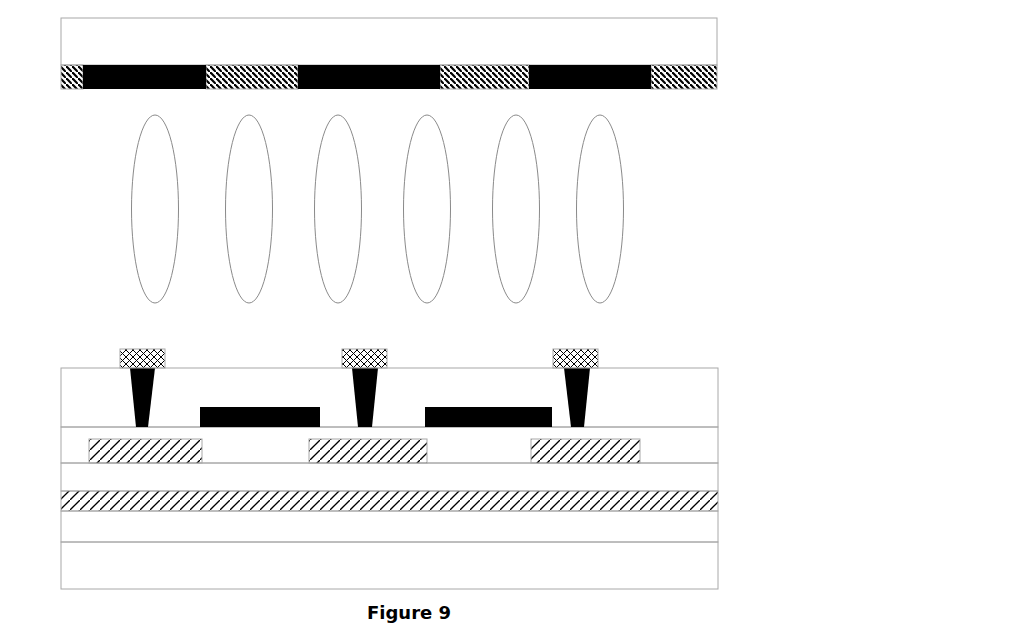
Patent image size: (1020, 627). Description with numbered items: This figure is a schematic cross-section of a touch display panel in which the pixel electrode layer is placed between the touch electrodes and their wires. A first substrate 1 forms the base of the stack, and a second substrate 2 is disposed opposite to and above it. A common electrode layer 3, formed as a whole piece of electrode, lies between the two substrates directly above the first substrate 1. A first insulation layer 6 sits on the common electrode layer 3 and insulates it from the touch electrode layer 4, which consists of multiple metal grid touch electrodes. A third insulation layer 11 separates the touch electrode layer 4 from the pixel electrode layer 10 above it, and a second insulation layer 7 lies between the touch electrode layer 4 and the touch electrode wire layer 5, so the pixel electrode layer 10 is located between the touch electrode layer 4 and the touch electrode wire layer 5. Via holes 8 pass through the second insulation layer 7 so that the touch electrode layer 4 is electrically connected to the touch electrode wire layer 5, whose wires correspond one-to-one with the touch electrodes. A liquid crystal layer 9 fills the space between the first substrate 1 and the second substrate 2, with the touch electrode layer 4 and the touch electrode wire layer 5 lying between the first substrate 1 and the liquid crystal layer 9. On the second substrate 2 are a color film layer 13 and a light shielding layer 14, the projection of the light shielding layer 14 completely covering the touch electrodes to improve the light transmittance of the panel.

The first substrate 1 is at (730, 560).
The second substrate 2 is at (731, 41).
The common electrode layer 3 is at (730, 496).
The touch electrode layer 4 is at (84, 440).
The touch electrode wire layer 5 is at (611, 355).
The first insulation layer 6 is at (730, 467).
The second insulation layer 7 is at (702, 386).
The via holes 8 is at (391, 380).
The liquid crystal layer 9 is at (637, 216).
The pixel electrode layer 10 is at (252, 396).
The third insulation layer 11 is at (702, 445).
The color film layer 13 is at (731, 77).
The light shielding layer 14 is at (672, 103).